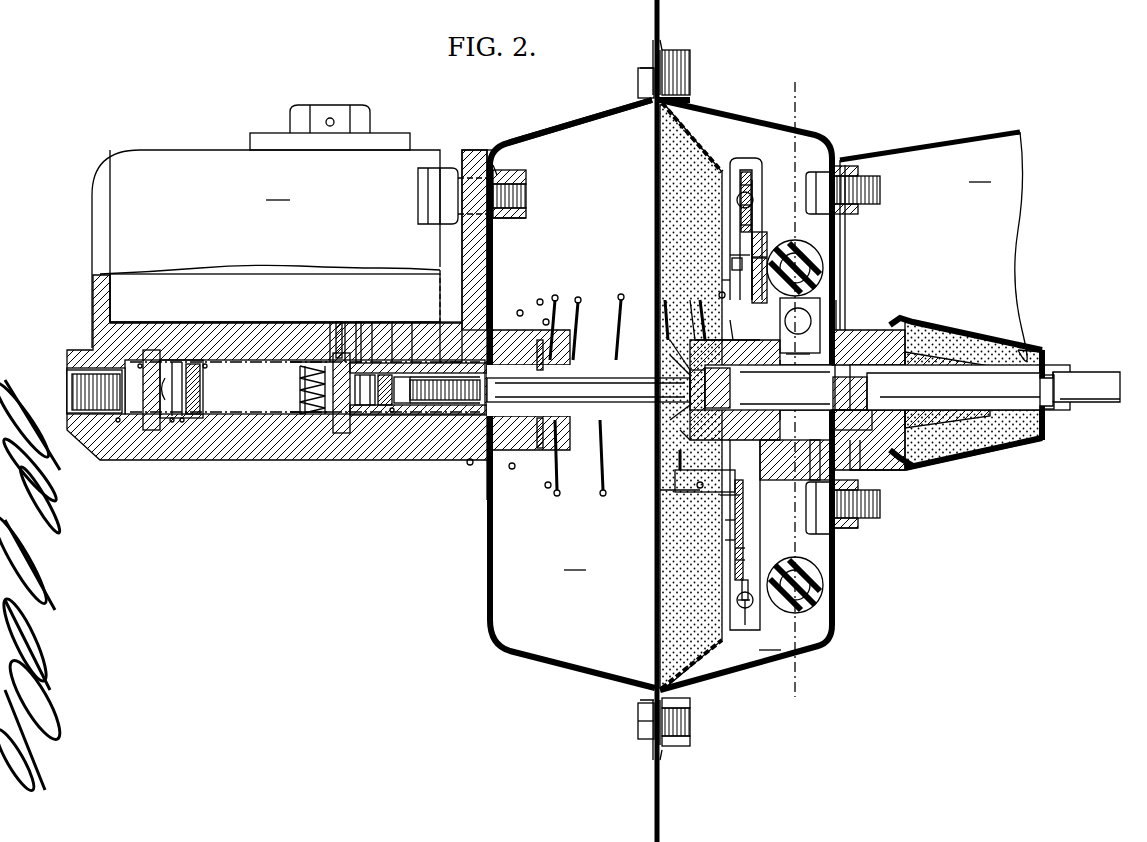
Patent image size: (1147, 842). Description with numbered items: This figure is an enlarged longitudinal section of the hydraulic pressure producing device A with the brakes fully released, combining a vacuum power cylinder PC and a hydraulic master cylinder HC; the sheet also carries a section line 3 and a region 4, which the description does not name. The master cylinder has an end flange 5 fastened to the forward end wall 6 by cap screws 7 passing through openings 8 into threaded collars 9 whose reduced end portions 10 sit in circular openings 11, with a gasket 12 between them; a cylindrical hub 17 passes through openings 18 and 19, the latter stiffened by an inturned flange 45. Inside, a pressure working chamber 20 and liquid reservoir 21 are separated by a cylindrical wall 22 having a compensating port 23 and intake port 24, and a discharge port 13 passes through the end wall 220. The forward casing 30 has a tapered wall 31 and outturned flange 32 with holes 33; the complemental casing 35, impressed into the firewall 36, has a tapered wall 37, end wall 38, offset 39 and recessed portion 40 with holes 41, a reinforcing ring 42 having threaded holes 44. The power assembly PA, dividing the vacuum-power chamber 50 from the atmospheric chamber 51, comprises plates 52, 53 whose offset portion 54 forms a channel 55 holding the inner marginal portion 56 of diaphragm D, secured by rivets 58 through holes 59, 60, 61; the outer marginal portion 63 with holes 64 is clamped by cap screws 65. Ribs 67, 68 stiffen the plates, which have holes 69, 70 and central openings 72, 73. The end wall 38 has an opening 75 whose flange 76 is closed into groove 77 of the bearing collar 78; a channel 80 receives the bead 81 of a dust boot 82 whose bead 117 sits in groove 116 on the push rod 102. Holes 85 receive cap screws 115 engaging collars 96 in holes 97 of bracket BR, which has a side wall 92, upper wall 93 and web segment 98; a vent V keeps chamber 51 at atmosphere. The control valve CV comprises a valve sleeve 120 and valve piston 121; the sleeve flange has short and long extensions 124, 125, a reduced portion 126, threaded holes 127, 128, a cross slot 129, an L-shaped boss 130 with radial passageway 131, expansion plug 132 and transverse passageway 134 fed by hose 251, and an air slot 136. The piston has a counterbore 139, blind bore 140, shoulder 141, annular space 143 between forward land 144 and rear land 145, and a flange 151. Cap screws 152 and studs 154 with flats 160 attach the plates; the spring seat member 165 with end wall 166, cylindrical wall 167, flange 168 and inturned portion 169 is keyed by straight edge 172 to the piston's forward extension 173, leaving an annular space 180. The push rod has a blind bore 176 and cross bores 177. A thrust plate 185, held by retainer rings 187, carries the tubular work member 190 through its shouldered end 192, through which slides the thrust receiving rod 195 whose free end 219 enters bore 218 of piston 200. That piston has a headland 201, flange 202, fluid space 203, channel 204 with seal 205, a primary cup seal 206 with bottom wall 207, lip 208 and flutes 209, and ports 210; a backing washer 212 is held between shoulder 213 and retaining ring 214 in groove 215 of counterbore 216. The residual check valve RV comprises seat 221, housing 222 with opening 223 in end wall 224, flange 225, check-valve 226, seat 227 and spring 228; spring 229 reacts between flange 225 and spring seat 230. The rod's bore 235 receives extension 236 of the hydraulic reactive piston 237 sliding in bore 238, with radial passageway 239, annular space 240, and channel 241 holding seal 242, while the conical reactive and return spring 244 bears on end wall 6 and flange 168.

The section line 3 is at (784, 87).
The diaphragm 4 is at (649, 151).
The end flange 5 is at (470, 160).
The forward end wall 6 is at (496, 252).
The cap screws 7 is at (418, 190).
The openings 8 is at (465, 180).
The internally threaded collars 9 is at (522, 180).
The reduced diameter end portions 10 is at (497, 170).
The circular openings 11 is at (505, 218).
The gasket 12 is at (496, 150).
The discharge port 13 is at (85, 368).
The cylindrical hub 17 is at (548, 488).
The circular opening 18 is at (478, 500).
The circular opening 19 is at (545, 320).
The pressure working chamber 20 is at (258, 420).
The liquid reservoir 21 is at (302, 268).
The cylindrical wall 22 is at (255, 322).
The compensating port 23 is at (300, 318).
The intake port 24 is at (348, 335).
The forward casing 30 is at (562, 120).
The tapered circular wall 31 is at (548, 655).
The outturned flange 32 is at (650, 55).
The holes 33 is at (648, 690).
The complemental casing 35 is at (708, 104).
The vehicle firewall 36 is at (662, 15).
The tapered wall 37 is at (795, 125).
The end wall 38 is at (838, 620).
The offset 39 is at (668, 40).
The recessed portion 40 is at (652, 40).
The holes 41 is at (690, 730).
The reinforcing ring 42 is at (692, 58).
The threaded holes 44 is at (690, 712).
The inturned flange 45 is at (540, 300).
The vacuum-power chamber 50 is at (575, 560).
The atmospheric chamber 51 is at (746, 657).
The diaphragm plate 52 is at (740, 176).
The diaphragm plate 53 is at (752, 158).
The offset portion 54 is at (740, 192).
The annular channel 55 is at (740, 208).
The inner marginal portion 56 is at (760, 190).
The rivets 58 is at (762, 210).
The holes 59 is at (740, 612).
The holes 60 is at (738, 600).
The holes 61 is at (740, 590).
The outer marginal portion 63 is at (640, 75).
The holes 64 is at (640, 726).
The cap screws 65 is at (637, 90).
The reinforcing ribs 67 is at (735, 562).
The reinforcing ribs 68 is at (735, 548).
The holes 69 is at (740, 228).
The holes 70 is at (760, 230).
The central opening 72 is at (725, 316).
The central opening 73 is at (730, 300).
The central circular opening 75 is at (856, 340).
The outturned flange 76 is at (892, 332).
The annular groove 77 is at (908, 326).
The bearing collar 78 is at (920, 448).
The annular channel 80 is at (960, 396).
The bead 81 is at (915, 470).
The dust boot 82 is at (998, 338).
The holes 85 is at (842, 160).
The side wall 92 is at (998, 246).
The upper wall 93 is at (975, 133).
The threaded collar 96 is at (878, 172).
The hole 97 is at (870, 206).
The web segment 98 is at (860, 534).
The push rod 102 is at (1094, 406).
The cap screws 115 is at (820, 175).
The annular groove 116 is at (1056, 407).
The bead 117 is at (1052, 362).
The valve sleeve 120 is at (856, 470).
The valve piston 121 is at (868, 455).
The short extensions 124 is at (725, 540).
The long extensions 125 is at (760, 250).
The reduced diameter portion 126 is at (735, 332).
The threaded holes 127 is at (732, 525).
The threaded holes 128 is at (737, 264).
The cross slot 129 is at (680, 440).
The L-shaped boss 130 is at (843, 312).
The radial passageway 131 is at (798, 344).
The expansion plug 132 is at (846, 280).
The transverse passageway 134 is at (800, 325).
The air slot 136 is at (838, 428).
The cylindrical counterbore 139 is at (900, 406).
The blind bore 140 is at (740, 372).
The annular shoulder 141 is at (740, 405).
The annular space 143 is at (814, 455).
The forward valve land 144 is at (728, 390).
The rear land 145 is at (805, 446).
The annular flange 151 is at (670, 340).
The cap screws 152 is at (735, 252).
The studs 154 is at (660, 495).
The flats 160 is at (725, 522).
The spring seat member 165 is at (720, 300).
The end wall 166 is at (675, 425).
The cylindrical wall 167 is at (720, 500).
The annular flange 168 is at (735, 508).
The inturned marginal portion 169 is at (725, 280).
The straight edge 172 is at (665, 375).
The forward end extension 173 is at (668, 355).
The blind longitudinal bore 176 is at (872, 330).
The cross bores 177 is at (862, 388).
The annular space 180 is at (690, 480).
The thrust plate 185 is at (660, 505).
The split retainer rings 187 is at (690, 460).
The tubular work member 190 is at (580, 310).
The reduced shouldered end 192 is at (680, 396).
The thrust receiving rod 195 is at (588, 389).
The piston 200 is at (445, 335).
The headland 201 is at (332, 430).
The annular flange 202 is at (520, 310).
The annular fluid space 203 is at (395, 340).
The annular channel 204 is at (470, 468).
The fluid-retaining seal 205 is at (512, 470).
The primary cup seal 206 is at (320, 440).
The bottom wall 207 is at (340, 330).
The peripheral lip 208 is at (310, 430).
The flutes 209 is at (330, 330).
The ports 210 is at (362, 335).
The backing washer 212 is at (548, 335).
The internal annular shoulder 213 is at (545, 450).
The retaining ring 214 is at (560, 350).
The internal annular groove 215 is at (575, 330).
The counterbore 216 is at (560, 440).
The blind axial bore 218 is at (430, 440).
The free end 219 is at (415, 335).
The end wall 220 is at (118, 428).
The annular valve seat 221 is at (140, 330).
The cup-shaped housing 222 is at (205, 330).
The opening 223 is at (203, 388).
The end wall 224 is at (200, 402).
The outturned annular flange 225 is at (165, 330).
The one-way check-valve 226 is at (182, 428).
The annular valve seat 227 is at (198, 414).
The spring 228 is at (172, 428).
The spring 229 is at (300, 388).
The spring seat 230 is at (312, 400).
The axial bore 235 is at (440, 430).
The reduced extension 236 is at (405, 430).
The hydraulic reactive piston 237 is at (345, 440).
The longitudinal bore 238 is at (375, 440).
The radial passageway 239 is at (375, 340).
The annular space 240 is at (365, 430).
The annular channel 241 is at (390, 430).
The ring-type seal 242 is at (392, 440).
The reactive and return spring 244 is at (622, 296).
The hose 251 is at (805, 246).
The hydraulic master cylinder HC is at (278, 190).
The residual pressure check-valve RV is at (190, 300).
The vacuum power cylinder PC is at (706, 92).
The hydraulic pressure producing device A is at (513, 118).
The flexible diaphragm D is at (692, 395).
The power assembly PA is at (776, 152).
The vent V is at (877, 273).
The control valve mechanism CV is at (868, 290).
The bracket BR is at (931, 123).